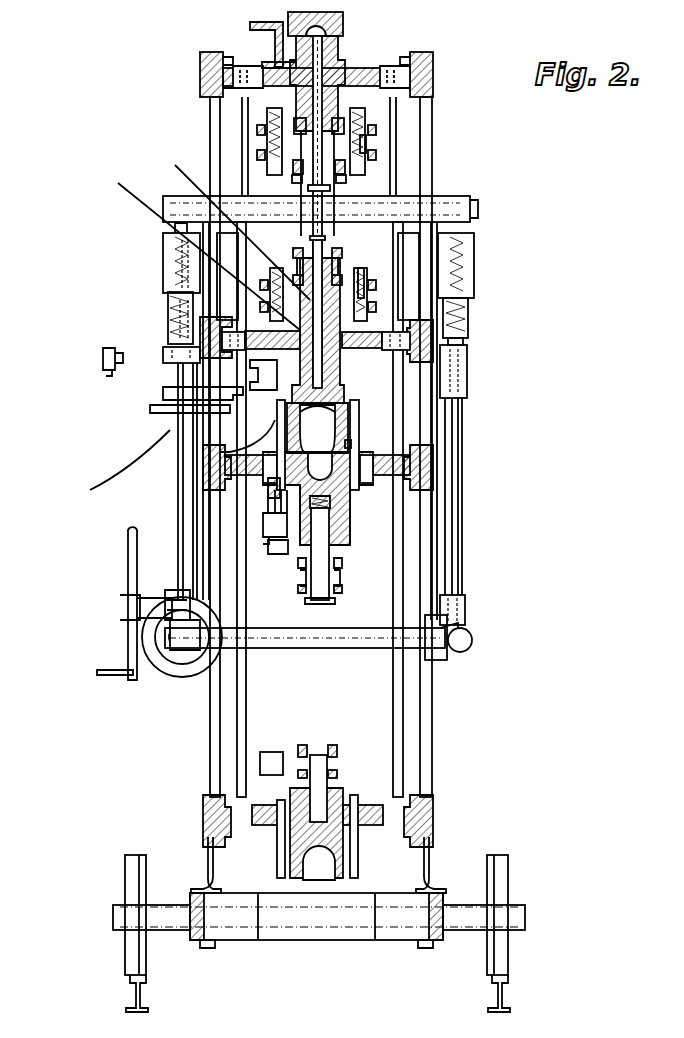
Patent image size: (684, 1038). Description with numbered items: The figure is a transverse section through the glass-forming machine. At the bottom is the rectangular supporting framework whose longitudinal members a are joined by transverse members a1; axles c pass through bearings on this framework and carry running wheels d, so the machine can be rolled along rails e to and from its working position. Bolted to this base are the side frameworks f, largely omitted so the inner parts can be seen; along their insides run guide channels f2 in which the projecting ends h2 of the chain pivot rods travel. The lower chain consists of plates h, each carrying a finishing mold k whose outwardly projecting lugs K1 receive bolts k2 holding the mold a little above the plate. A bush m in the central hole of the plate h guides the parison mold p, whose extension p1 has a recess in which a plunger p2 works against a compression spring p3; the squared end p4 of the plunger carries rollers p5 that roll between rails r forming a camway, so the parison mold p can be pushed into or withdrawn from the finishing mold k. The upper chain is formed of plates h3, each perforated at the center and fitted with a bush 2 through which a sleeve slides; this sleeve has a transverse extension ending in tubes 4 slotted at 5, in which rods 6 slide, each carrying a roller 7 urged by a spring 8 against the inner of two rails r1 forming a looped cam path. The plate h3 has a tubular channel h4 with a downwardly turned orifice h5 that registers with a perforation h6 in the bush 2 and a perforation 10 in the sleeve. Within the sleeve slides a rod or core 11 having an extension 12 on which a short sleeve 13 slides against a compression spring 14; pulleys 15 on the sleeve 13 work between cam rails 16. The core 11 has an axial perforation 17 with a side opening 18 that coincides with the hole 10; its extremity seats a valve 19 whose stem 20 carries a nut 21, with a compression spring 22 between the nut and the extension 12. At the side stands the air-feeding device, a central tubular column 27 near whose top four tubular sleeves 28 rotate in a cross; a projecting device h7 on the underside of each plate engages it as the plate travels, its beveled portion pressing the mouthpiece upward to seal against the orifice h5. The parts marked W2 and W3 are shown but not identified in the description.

The bush 2 is at (475, 260).
The tubes 4 is at (295, 262).
The slots 5 is at (275, 290).
The rod 6 is at (368, 142).
The pulley or roller 7 is at (256, 145).
The spring 8 is at (278, 110).
The perforation 10 is at (190, 290).
The rod or core 11 is at (468, 340).
The extension 12 is at (336, 258).
The short sleeve 13 is at (360, 272).
The compression spring 14 is at (300, 258).
The pulleys 15 is at (215, 190).
The cam rails 16 is at (400, 190).
The large perforation 17 is at (465, 300).
The side opening 18 is at (190, 320).
The valve 19 is at (247, 436).
The stem 20 is at (332, 356).
The nut 21 is at (395, 160).
The compression spring 22 is at (300, 200).
The central tubular column 27 is at (185, 430).
The tubular sleeves 28 is at (140, 390).
The longitudinal members a is at (200, 948).
The transverse members a1 is at (310, 930).
The axles c is at (175, 905).
The running wheels d is at (128, 918).
The rails e is at (128, 990).
The side frameworks f is at (430, 172).
The guide channels f2 is at (435, 330).
The plates h is at (350, 495).
The projecting ends h2 is at (430, 355).
The plates h3 is at (175, 318).
The tubular channel h4 is at (250, 375).
The orifice h5 is at (175, 412).
The perforation h6 is at (172, 325).
The projecting device h7 is at (120, 468).
The finishing molds k is at (350, 440).
The lugs K1 is at (360, 425).
The bolts k2 is at (245, 470).
The bush m is at (318, 518).
The parison mold p is at (275, 490).
The extension p1 is at (363, 505).
The plunger p2 is at (340, 585).
The compression spring p3 is at (300, 560).
The squared portion p4 is at (311, 603).
The pulleys or rollers p5 is at (300, 572).
The rails r is at (340, 600).
The rails r1 is at (200, 240).
The lever W2 is at (255, 535).
The hand wheel W3 is at (252, 500).